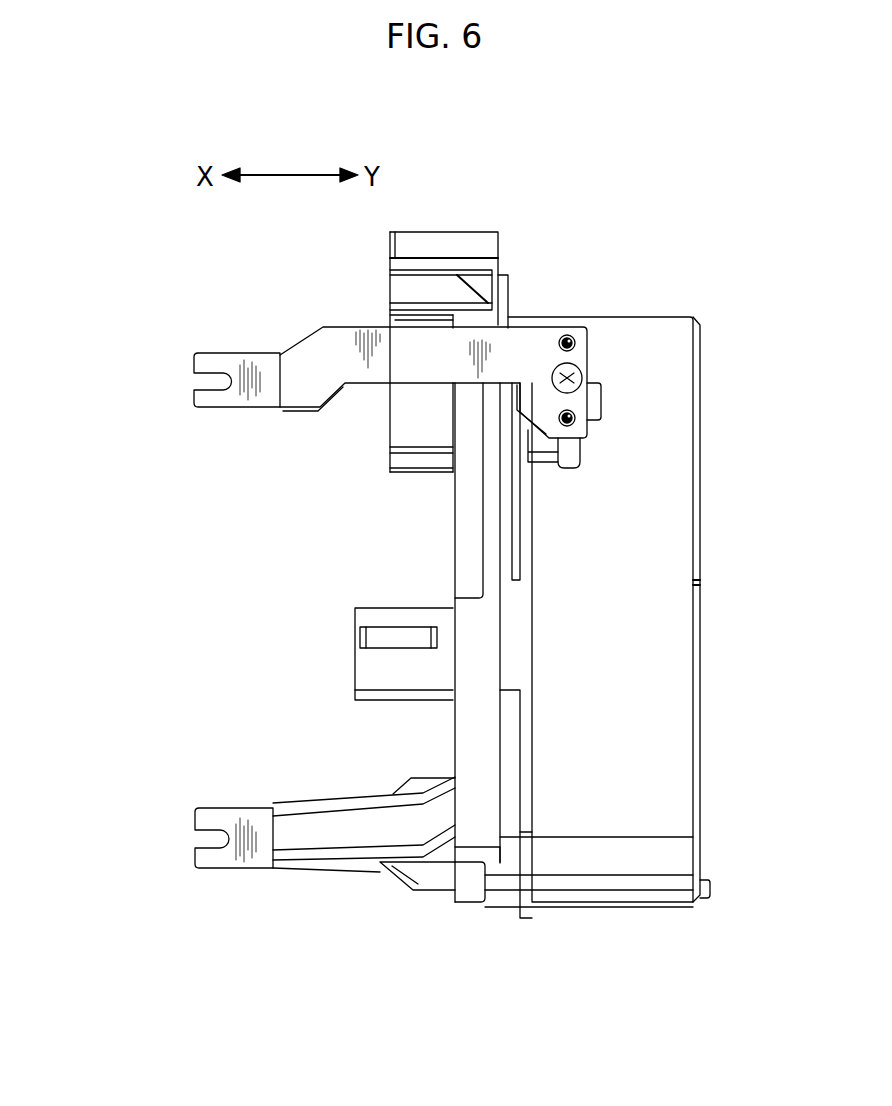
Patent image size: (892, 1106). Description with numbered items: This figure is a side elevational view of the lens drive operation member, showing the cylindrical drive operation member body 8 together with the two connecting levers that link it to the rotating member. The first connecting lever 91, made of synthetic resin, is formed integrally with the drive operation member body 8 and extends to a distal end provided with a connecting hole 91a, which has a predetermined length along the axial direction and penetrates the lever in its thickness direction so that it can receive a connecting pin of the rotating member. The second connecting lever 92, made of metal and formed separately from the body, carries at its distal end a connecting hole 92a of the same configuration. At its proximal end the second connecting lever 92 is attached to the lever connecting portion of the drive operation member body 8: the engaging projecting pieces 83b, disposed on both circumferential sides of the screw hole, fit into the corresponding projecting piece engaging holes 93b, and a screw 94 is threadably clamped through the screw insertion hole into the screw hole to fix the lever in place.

The drive operation member body 8 is at (702, 520).
The second connecting lever 92 is at (316, 370).
The connecting hole 92a is at (200, 381).
The first connecting lever 91 is at (313, 870).
The connecting hole 91a is at (204, 840).
The engaging projecting pieces 83b is at (565, 336).
The projecting piece engaging holes 93b is at (586, 352).
The screw 94 is at (588, 370).